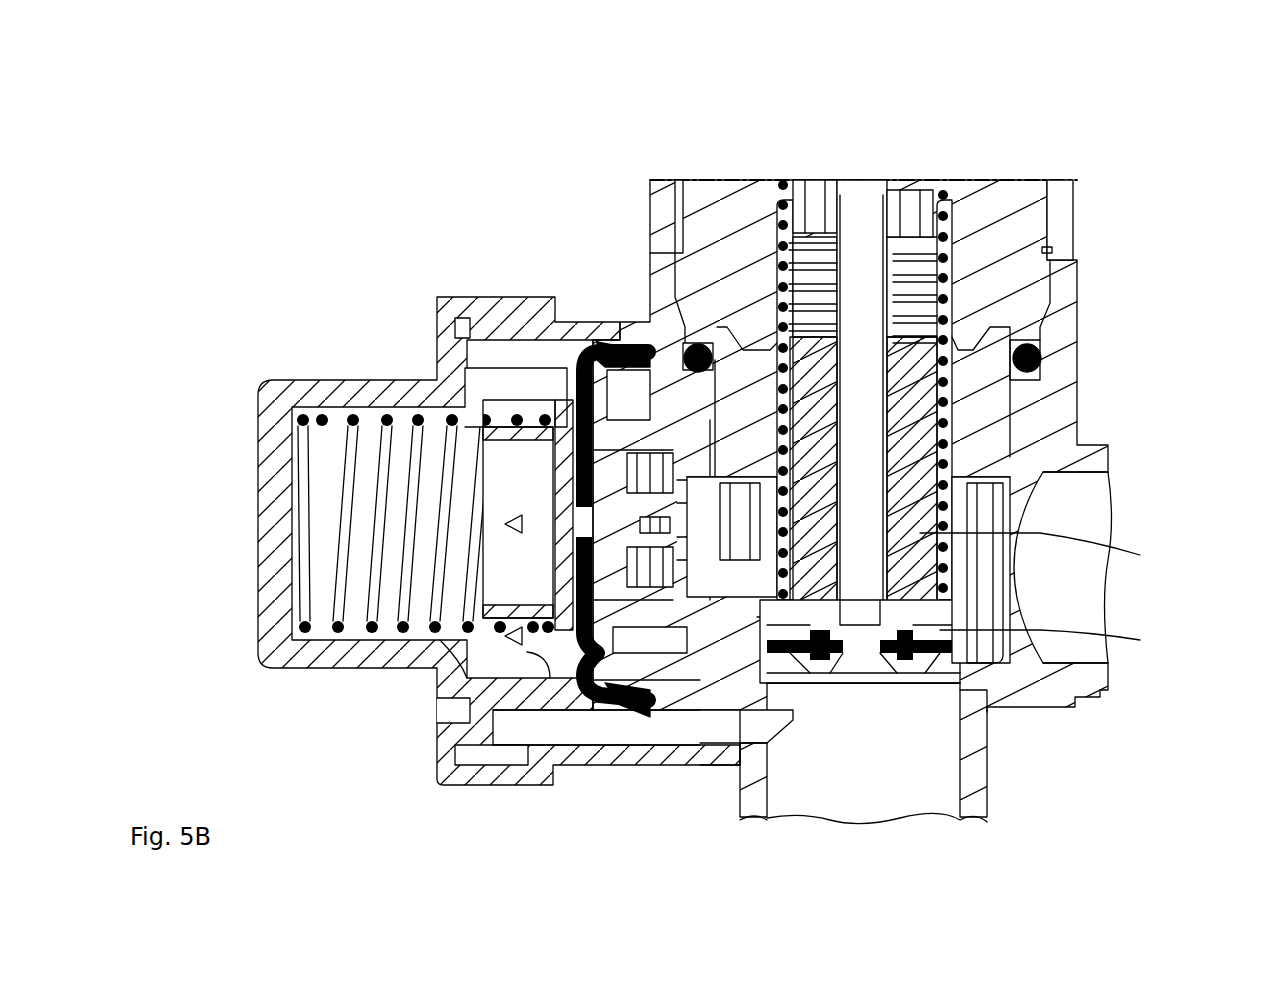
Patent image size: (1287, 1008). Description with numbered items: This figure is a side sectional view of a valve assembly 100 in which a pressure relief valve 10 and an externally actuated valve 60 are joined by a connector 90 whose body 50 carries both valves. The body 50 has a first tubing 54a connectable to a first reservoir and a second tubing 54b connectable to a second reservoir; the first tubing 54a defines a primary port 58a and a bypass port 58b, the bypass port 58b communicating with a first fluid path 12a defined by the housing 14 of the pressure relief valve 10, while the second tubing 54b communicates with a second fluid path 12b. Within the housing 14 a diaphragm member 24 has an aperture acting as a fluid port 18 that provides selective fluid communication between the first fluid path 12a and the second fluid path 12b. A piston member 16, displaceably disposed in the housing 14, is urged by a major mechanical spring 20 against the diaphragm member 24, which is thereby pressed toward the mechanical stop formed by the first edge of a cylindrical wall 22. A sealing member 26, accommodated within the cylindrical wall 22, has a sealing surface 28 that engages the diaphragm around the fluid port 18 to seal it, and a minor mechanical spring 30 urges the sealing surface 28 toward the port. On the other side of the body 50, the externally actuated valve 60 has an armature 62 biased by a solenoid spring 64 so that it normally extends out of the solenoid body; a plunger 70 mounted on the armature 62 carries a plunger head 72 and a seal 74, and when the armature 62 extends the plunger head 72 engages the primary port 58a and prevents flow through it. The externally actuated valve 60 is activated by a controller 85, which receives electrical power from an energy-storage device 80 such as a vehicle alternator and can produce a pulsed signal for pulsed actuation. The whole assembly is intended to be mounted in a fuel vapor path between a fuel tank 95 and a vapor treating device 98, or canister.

The pressure relief valve 10 is at (283, 368).
The first fluid path 12a is at (510, 663).
The second fluid path 12b is at (742, 470).
The housing 14 is at (348, 380).
The piston member 16 is at (522, 488).
The fluid port 18 is at (575, 518).
The major mechanical spring 20 is at (345, 505).
The cylindrical wall 22 is at (555, 720).
The diaphragm member 24 is at (640, 460).
The sealing member 26 is at (652, 263).
The sealing surface 28 is at (470, 783).
The minor mechanical spring 30 is at (705, 470).
The body 50 is at (1128, 300).
The first tubing 54a is at (745, 790).
The second tubing 54b is at (1093, 498).
The primary port 58a is at (655, 695).
The bypass port 58b is at (762, 727).
The externally actuated valve 60 is at (863, 380).
The armature 62 is at (1040, 333).
The solenoid spring 64 is at (1050, 225).
The plunger 70 is at (918, 538).
The plunger head 72 is at (935, 637).
The seal 74 is at (908, 680).
The energy-storage device 80 is at (850, 124).
The controller 85 is at (822, 180).
The connector 90 is at (1095, 205).
The fuel tank 95 is at (1103, 603).
The vapor treating device 98 is at (866, 822).
The valve assembly 100 is at (1105, 140).